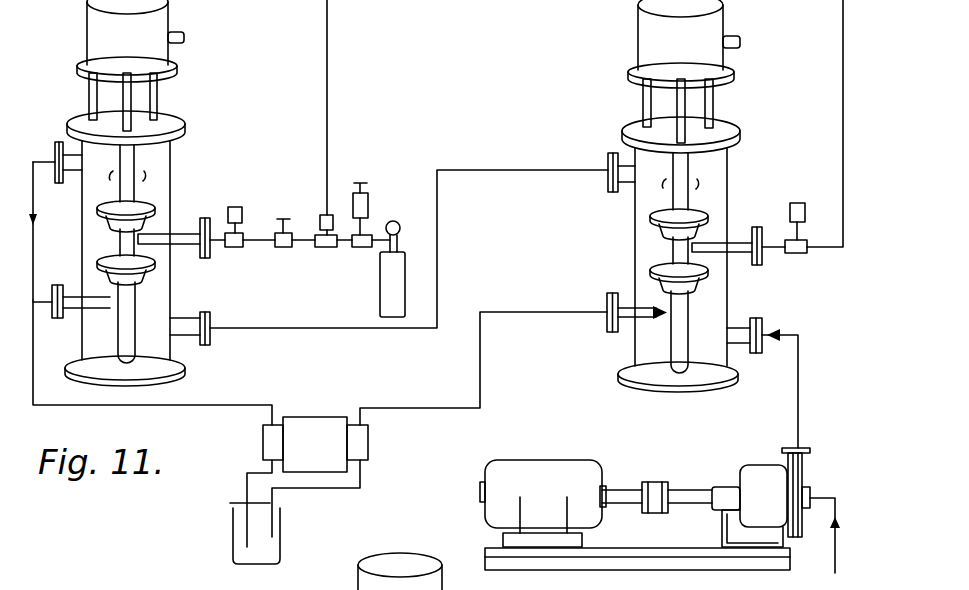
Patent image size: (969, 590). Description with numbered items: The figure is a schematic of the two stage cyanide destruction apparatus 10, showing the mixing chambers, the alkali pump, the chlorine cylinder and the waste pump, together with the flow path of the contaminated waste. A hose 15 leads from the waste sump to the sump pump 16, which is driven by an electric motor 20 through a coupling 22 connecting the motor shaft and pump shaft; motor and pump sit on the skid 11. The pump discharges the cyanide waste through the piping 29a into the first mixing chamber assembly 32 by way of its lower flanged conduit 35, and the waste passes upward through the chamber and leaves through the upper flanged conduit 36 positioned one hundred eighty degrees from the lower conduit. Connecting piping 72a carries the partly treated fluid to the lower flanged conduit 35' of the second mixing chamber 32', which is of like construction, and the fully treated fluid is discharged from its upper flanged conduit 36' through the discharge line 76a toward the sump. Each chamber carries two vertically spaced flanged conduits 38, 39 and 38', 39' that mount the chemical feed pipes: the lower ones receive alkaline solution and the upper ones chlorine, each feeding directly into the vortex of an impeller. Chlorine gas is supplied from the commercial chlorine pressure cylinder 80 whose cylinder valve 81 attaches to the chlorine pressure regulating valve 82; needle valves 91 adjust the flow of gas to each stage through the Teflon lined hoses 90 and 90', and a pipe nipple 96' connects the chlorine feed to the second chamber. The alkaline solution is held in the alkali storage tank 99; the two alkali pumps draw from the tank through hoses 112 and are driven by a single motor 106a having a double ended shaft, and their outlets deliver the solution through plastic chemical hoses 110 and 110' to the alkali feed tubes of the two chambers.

The two stage apparatus 10 is at (425, 107).
The skid 11 is at (645, 563).
The hose 15 is at (833, 560).
The sump pump 16 is at (752, 480).
The electric motor 20 is at (547, 465).
The coupling 22 is at (658, 482).
The piping 29a is at (798, 400).
The mixing chamber assembly 32 is at (712, 181).
The second mixing chamber 32' is at (160, 170).
The lower flanged conduit 35 is at (744, 323).
The outlet fitting 35' is at (190, 315).
The upper flange conduit 36 is at (612, 188).
The upper flanged conduit 36' is at (57, 150).
The flanged conduit 38 is at (601, 326).
The lower fitting 38' is at (52, 315).
The flanged conduit 39 is at (738, 228).
The feed pipe 39' is at (172, 213).
The transfer line 72a is at (447, 273).
The return line 76a is at (49, 231).
The chlorine pressure cylinder 80 is at (380, 290).
The cylinder valve 81 is at (400, 226).
The chlorine pressure regulating valve 82 is at (372, 226).
The Teflon lined hose 90 is at (316, 262).
The Teflon lined hose 90' is at (343, 123).
The needle valve 91 is at (319, 226).
The pipe nipple 96' is at (220, 249).
The alkali storage tank 99 is at (282, 535).
The motor 106a is at (334, 454).
The chemical hose 110 is at (483, 354).
The chemical hose 110' is at (152, 362).
The hose 112 is at (240, 498).